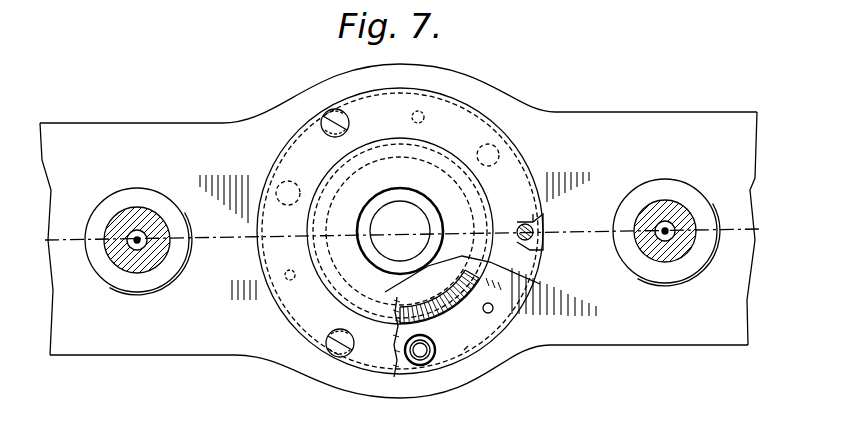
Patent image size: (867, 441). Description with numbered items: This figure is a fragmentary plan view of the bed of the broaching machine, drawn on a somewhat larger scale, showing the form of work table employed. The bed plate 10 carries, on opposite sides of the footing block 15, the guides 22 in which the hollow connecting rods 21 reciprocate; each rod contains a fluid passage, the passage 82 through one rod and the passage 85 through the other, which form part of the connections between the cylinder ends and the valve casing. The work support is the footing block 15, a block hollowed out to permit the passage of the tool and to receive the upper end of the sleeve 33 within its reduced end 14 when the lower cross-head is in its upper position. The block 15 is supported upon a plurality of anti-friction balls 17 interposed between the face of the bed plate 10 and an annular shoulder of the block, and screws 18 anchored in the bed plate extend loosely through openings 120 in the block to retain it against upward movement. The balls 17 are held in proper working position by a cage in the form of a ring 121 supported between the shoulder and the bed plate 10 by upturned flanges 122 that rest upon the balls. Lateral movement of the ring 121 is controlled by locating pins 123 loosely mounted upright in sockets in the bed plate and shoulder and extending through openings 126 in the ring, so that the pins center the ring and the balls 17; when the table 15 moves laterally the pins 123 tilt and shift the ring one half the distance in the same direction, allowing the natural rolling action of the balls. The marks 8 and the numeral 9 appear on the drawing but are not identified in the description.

The section line 8 is at (38, 236).
The shaft 9 is at (300, 270).
The bed plate 10 is at (395, 230).
The reduced end 14 is at (442, 292).
The footing block 15 is at (302, 306).
The anti-friction balls 17 is at (285, 182).
The screws 18 is at (333, 350).
The connecting rods 21 is at (137, 262).
The guides 22 is at (172, 275).
The sleeve 33 is at (417, 202).
The passage 82 is at (665, 226).
The passage 85 is at (137, 235).
The openings 120 is at (537, 212).
The ring 121 is at (464, 350).
The upturned flanges 122 is at (405, 372).
The locating pins 123 is at (422, 112).
The openings 126 is at (497, 303).